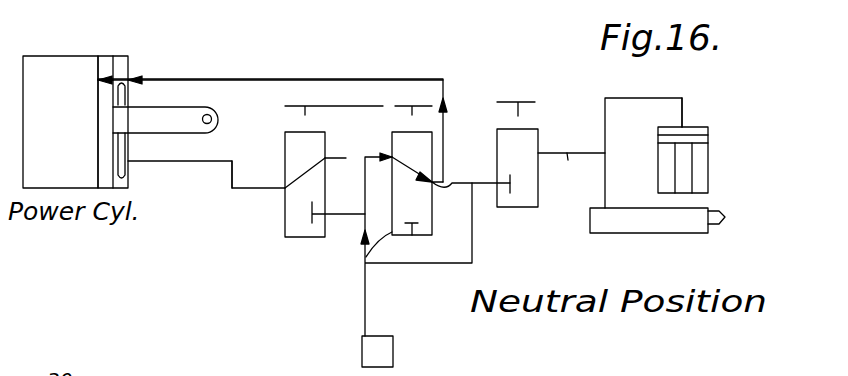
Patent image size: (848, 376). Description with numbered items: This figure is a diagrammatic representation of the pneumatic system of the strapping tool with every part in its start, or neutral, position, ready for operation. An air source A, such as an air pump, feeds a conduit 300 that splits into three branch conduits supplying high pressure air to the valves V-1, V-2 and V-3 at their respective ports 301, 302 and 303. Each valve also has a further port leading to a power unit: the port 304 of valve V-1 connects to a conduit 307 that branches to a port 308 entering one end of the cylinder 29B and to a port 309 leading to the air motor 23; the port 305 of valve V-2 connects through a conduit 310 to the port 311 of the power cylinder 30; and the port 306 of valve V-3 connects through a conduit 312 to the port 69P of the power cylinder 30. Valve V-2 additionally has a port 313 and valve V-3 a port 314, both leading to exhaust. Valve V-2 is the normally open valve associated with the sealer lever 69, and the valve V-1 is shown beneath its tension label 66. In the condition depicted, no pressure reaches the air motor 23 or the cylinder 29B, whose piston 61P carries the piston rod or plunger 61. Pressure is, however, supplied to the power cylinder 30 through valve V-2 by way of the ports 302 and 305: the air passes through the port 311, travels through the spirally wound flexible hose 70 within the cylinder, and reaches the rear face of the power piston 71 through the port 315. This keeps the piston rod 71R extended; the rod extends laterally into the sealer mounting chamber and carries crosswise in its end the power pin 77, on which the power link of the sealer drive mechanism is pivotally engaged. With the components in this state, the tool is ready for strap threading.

The power cylinder 30 is at (65, 56).
The power piston 71 is at (107, 56).
The flexible hose 70 is at (118, 155).
The piston rod 71R is at (173, 112).
The power pin 77 is at (212, 118).
The port 311 is at (128, 80).
The port 315 is at (98, 80).
The port 69P is at (128, 162).
The conduit 312 is at (217, 163).
The valve V-3 is at (300, 237).
The port 306 is at (284, 184).
The port 314 is at (328, 152).
The port 303 is at (326, 214).
The conduit 300 is at (365, 300).
The port 313 is at (363, 246).
The air source A is at (395, 348).
The valve V-2 is at (420, 223).
The port 302 is at (392, 157).
The port 305 is at (440, 186).
The conduit 310 is at (405, 79).
The sealer lever 69 is at (384, 106).
The valve V-1 is at (538, 186).
The port 301 is at (497, 185).
The tension control 66 is at (532, 106).
The port 304 is at (540, 152).
The conduit 307 is at (569, 169).
The port 309 is at (606, 207).
The port 308 is at (683, 124).
The cylinder 29B is at (710, 163).
The piston 61P is at (693, 139).
The piston rod 61 is at (685, 181).
The air motor 23 is at (695, 233).